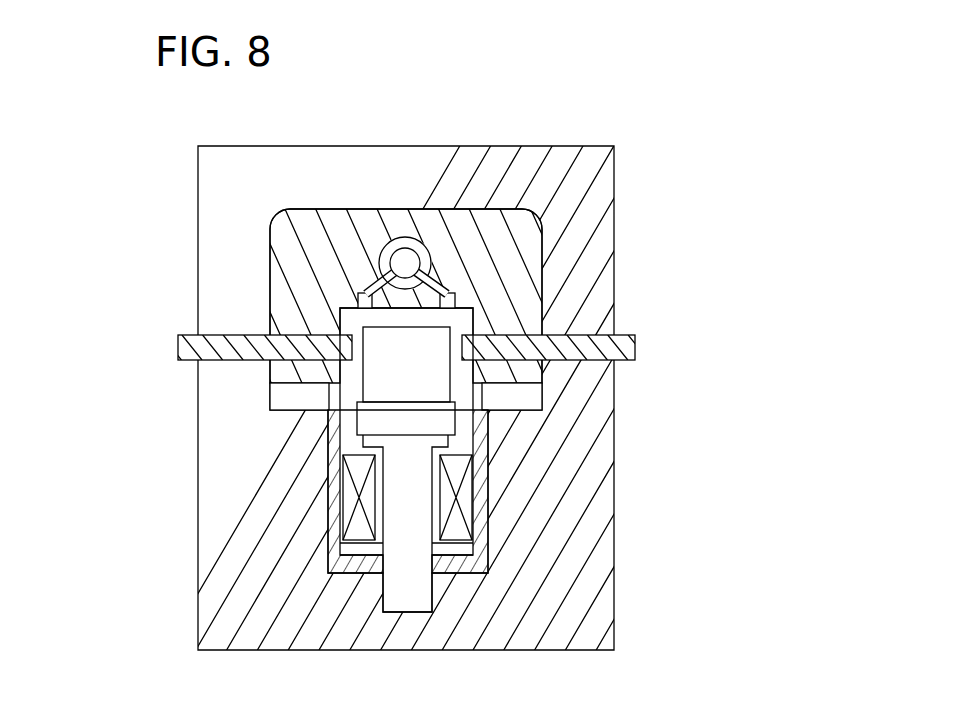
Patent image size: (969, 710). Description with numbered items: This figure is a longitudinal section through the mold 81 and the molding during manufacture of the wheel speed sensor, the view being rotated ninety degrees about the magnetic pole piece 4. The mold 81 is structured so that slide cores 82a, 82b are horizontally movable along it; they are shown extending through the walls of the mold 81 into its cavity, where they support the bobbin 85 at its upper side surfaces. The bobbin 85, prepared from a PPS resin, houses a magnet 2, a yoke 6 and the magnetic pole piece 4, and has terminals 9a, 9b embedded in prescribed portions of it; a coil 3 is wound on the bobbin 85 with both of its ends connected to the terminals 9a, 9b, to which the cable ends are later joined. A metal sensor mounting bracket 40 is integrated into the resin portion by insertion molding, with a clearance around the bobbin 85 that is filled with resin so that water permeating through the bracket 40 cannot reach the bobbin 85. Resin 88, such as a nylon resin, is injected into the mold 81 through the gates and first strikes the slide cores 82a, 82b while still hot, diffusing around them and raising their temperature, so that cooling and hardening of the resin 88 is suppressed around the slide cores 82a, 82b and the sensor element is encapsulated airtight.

The mold 81 is at (650, 133).
The resin 88 is at (313, 257).
The slide core 82a is at (192, 350).
The slide core 82b is at (637, 341).
The sensor mounting bracket 40 is at (527, 399).
The bobbin 85 is at (462, 443).
The magnet 2 is at (375, 422).
The yoke 6 is at (430, 353).
The magnetic pole piece 4 is at (415, 602).
The coil 3 is at (463, 503).
The terminal 9a is at (367, 292).
The terminal 9b is at (445, 292).